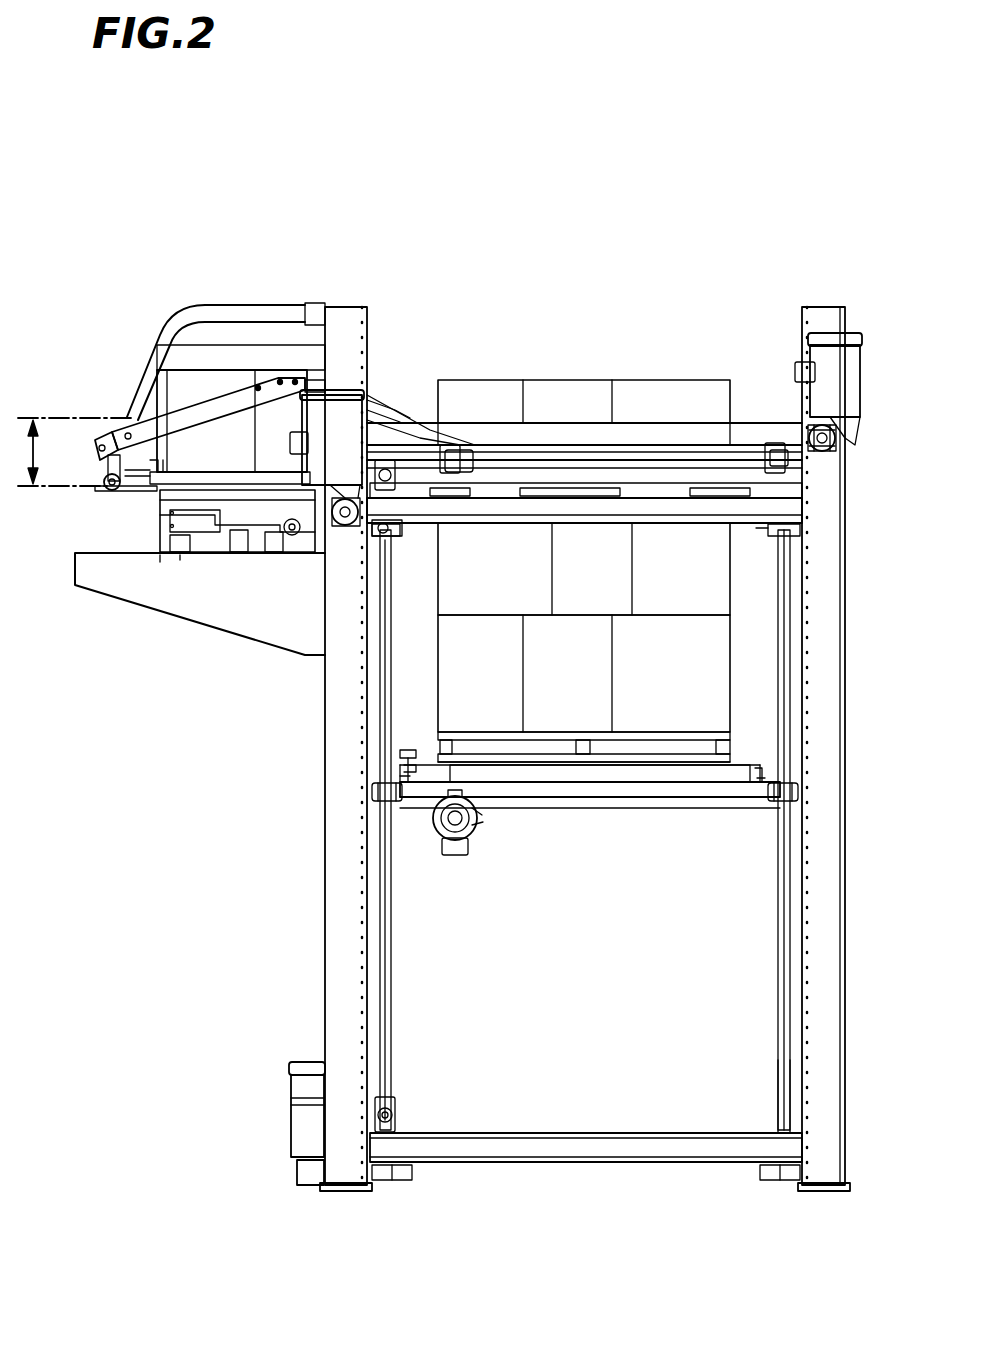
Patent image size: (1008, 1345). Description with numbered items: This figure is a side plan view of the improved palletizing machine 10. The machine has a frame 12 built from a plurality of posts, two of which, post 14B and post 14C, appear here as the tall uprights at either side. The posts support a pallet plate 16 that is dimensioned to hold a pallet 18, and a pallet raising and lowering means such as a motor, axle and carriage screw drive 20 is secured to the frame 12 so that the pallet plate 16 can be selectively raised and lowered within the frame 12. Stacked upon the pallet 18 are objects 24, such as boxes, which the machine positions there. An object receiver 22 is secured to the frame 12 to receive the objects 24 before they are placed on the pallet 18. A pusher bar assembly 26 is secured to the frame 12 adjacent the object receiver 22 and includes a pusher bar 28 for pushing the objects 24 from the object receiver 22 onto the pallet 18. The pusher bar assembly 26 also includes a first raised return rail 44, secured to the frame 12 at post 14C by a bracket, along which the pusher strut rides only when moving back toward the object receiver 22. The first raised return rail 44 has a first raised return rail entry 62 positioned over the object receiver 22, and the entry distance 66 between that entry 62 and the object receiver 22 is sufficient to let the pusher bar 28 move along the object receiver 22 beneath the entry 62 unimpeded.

The palletizing machine 10 is at (748, 130).
The frame 12 is at (848, 786).
The post 14B is at (828, 1068).
The post 14C is at (345, 977).
The pallet plate 16 is at (548, 790).
The pallet 18 is at (690, 782).
The carriage screw drive 20 is at (305, 1130).
The object receiver 22 is at (160, 588).
The objects 24 is at (665, 400).
The pusher bar assembly 26 is at (240, 288).
The pusher bar 28 is at (110, 465).
The first raised return rail 44 is at (168, 315).
The first raised return rail entry 62 is at (135, 417).
The entry distance 66 is at (40, 460).